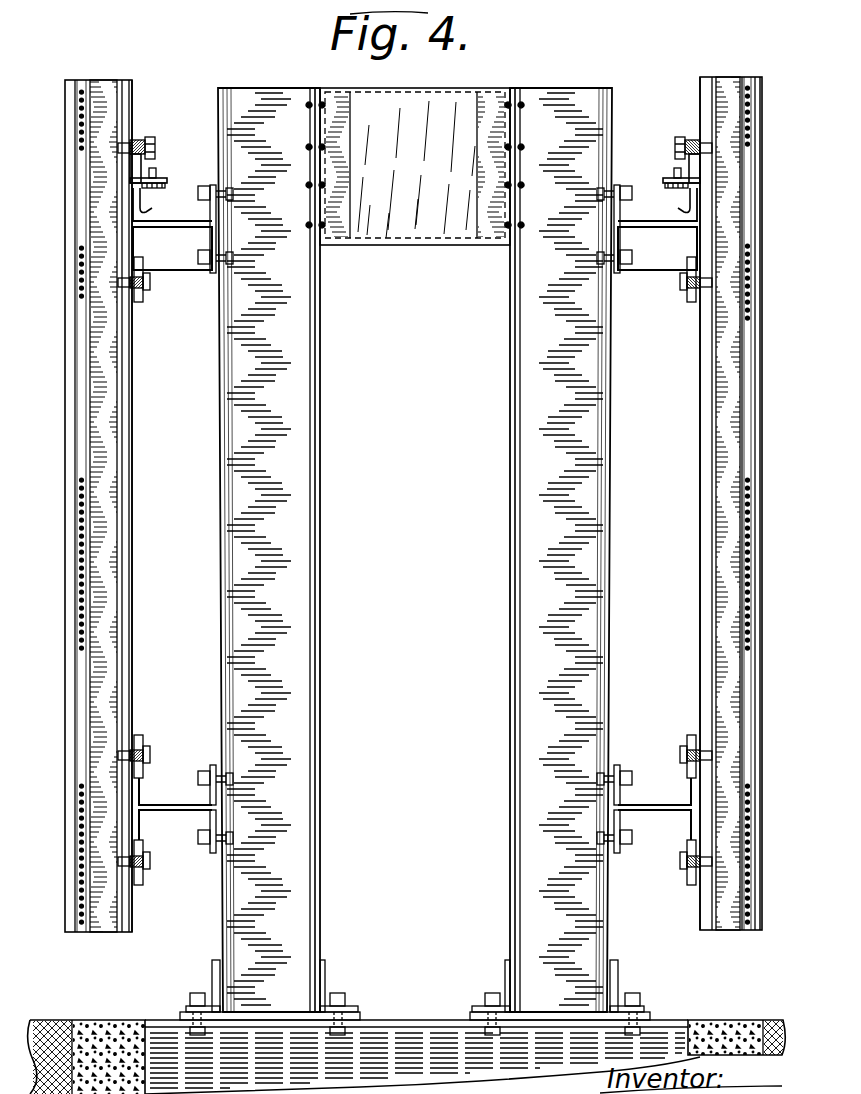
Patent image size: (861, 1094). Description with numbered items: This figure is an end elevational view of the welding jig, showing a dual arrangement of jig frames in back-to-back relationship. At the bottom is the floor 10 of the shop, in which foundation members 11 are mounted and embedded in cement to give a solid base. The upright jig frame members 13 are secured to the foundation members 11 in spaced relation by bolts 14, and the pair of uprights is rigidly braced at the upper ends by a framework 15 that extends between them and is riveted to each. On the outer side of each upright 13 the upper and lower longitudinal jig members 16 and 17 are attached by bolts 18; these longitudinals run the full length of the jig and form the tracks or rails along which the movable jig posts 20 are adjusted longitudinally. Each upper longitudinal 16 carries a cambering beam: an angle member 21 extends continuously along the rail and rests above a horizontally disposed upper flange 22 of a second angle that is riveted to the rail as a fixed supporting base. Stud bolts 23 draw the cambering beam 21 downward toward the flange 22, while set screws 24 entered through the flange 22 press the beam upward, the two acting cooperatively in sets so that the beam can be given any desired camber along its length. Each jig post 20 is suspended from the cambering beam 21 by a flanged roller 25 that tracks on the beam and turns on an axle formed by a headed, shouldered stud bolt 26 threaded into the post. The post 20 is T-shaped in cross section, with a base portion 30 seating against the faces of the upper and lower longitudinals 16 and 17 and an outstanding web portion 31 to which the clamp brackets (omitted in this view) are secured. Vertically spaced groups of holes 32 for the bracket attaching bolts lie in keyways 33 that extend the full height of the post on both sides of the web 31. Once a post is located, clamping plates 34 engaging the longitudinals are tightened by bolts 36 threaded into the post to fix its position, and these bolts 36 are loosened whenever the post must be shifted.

The floor 10 is at (50, 1018).
The foundation members 11 is at (398, 1040).
The upright jig frame members 13 is at (318, 432).
The bolts 14 is at (192, 995).
The framework 15 is at (416, 237).
The upper longitudinal jig member 16 is at (165, 232).
The lower longitudinal jig member 17 is at (165, 797).
The bolts 18 is at (230, 248).
The movable jig post 20 is at (133, 414).
The cambering beam angle member 21 is at (147, 165).
The horizontal flange of supporting angle 22 is at (163, 185).
The stud bolts 23 is at (153, 174).
The set screws 24 is at (150, 192).
The roller 25 is at (135, 140).
The headed stud bolt 26 is at (150, 140).
The base portion 30 is at (133, 560).
The web portion 31 is at (95, 684).
The holes 32 is at (77, 118).
The keyways 33 is at (82, 724).
The clamping plates 34 is at (146, 270).
The bolts 36 is at (150, 285).